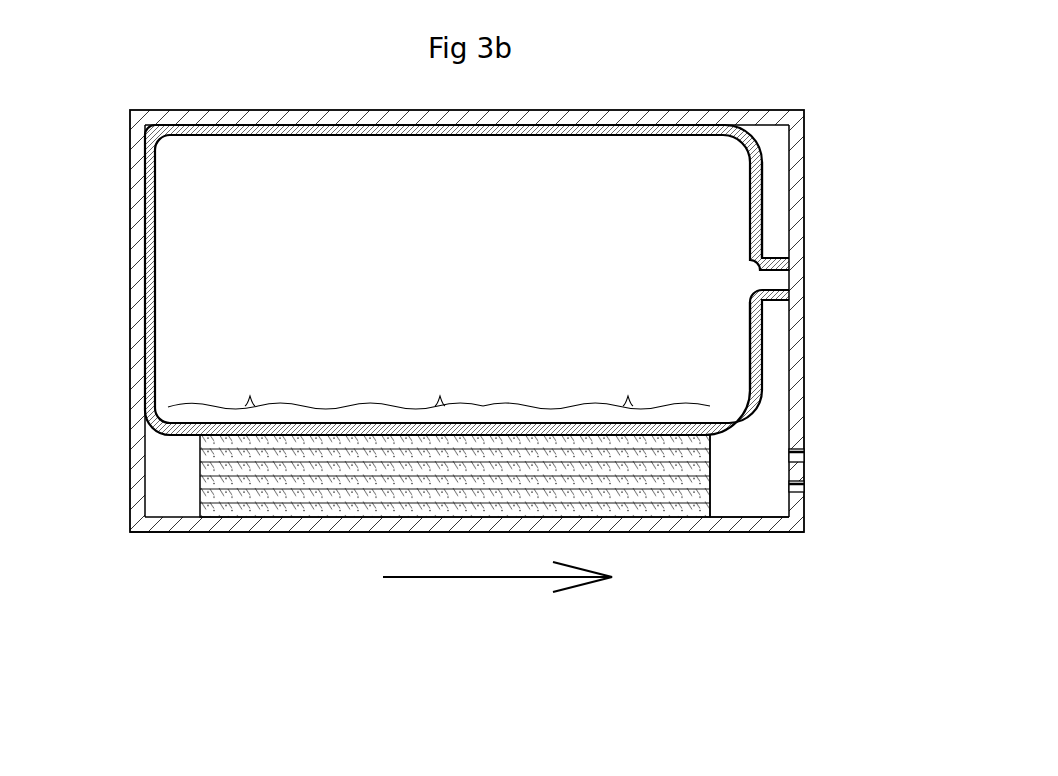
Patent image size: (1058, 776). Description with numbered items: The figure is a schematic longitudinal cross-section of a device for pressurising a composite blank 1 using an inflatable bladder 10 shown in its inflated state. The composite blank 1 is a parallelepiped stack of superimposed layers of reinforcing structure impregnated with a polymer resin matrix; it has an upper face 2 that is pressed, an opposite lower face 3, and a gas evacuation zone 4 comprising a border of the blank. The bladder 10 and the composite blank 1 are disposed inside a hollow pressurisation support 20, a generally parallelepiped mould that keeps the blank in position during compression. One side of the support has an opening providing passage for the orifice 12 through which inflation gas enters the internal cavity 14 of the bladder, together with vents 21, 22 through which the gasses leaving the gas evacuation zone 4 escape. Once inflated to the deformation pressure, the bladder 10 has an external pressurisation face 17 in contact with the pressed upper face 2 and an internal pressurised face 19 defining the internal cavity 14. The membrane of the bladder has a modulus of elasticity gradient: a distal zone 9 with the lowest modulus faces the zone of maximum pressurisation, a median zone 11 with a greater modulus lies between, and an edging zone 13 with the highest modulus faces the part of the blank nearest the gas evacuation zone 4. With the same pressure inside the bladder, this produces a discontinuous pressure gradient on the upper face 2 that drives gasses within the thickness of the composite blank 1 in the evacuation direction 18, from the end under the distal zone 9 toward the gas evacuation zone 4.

The composite blank 1 is at (220, 478).
The upper face 2 is at (298, 437).
The lower face 3 is at (282, 523).
The gas evacuation zone 4 is at (740, 487).
The distal zone 9 is at (214, 387).
The inflatable bladder 10 is at (776, 152).
The median zone 11 is at (370, 387).
The orifice 12 is at (824, 280).
The edging zone 13 is at (596, 387).
The internal cavity 14 is at (636, 305).
The external pressurisation face 17 is at (247, 440).
The evacuation direction 18 is at (465, 577).
The internal pressurised face 19 is at (170, 235).
The pressurisation support 20 is at (138, 249).
The vent 21 is at (820, 452).
The vent 22 is at (820, 485).